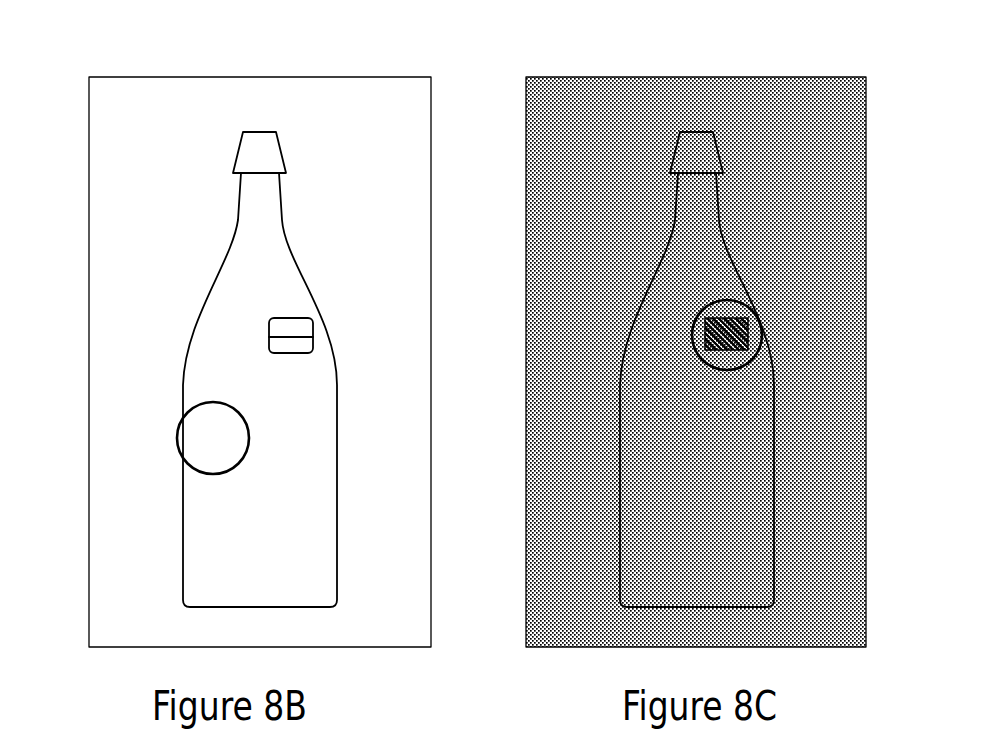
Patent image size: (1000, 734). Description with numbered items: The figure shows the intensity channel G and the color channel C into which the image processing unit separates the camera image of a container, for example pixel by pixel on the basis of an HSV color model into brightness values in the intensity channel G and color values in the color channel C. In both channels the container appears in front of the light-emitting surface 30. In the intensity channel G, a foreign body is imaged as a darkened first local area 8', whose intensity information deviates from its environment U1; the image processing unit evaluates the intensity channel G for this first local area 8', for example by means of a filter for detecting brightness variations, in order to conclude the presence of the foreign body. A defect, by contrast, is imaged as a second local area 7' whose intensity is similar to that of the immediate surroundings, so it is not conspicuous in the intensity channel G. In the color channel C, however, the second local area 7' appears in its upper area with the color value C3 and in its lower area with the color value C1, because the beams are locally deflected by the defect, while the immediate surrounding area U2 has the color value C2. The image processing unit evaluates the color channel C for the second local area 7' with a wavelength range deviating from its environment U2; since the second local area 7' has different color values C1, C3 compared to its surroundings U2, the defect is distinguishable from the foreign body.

In FIG. 8B, the intensity channel G is at (70, 68).
In FIG. 8B, the light-emitting surface 30 is at (380, 77).
In FIG. 8B, the first local area 8' is at (181, 369).
In FIG. 8C, the first local area 8' is at (618, 369).
In FIG. 8B, the second local area 7' is at (376, 328).
In FIG. 8C, the second local area 7' is at (810, 352).
In FIG. 8B, the environment U1 is at (185, 409).
In FIG. 8C, the color channel C is at (872, 68).
In FIG. 8C, the environment U2 is at (730, 370).
In FIG. 8C, the color value C1 is at (764, 342).
In FIG. 8C, the color value C2 is at (747, 313).
In FIG. 8C, the color value C3 is at (762, 330).